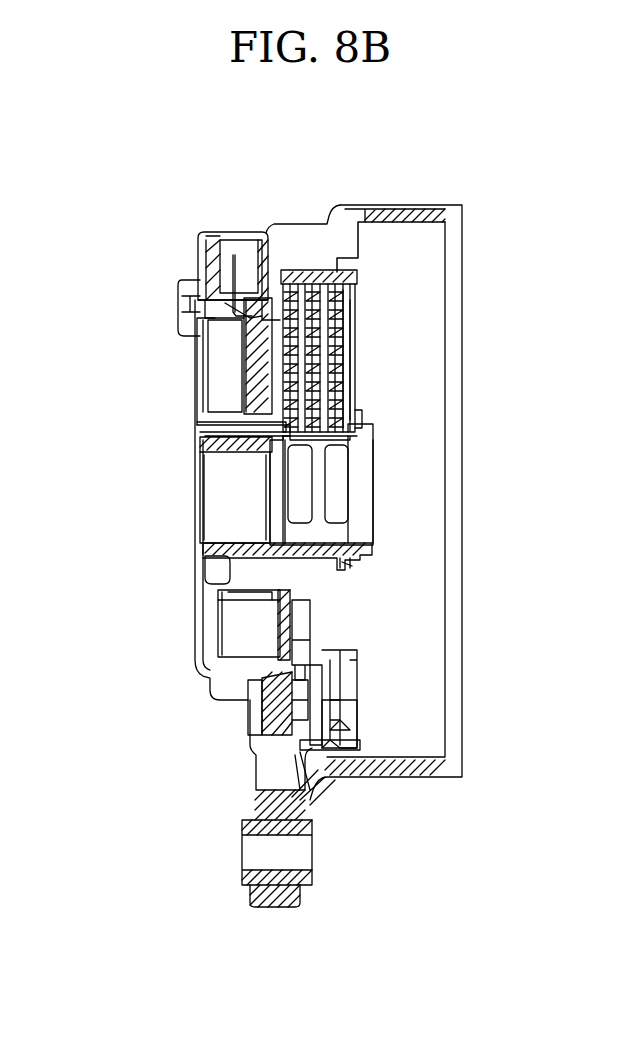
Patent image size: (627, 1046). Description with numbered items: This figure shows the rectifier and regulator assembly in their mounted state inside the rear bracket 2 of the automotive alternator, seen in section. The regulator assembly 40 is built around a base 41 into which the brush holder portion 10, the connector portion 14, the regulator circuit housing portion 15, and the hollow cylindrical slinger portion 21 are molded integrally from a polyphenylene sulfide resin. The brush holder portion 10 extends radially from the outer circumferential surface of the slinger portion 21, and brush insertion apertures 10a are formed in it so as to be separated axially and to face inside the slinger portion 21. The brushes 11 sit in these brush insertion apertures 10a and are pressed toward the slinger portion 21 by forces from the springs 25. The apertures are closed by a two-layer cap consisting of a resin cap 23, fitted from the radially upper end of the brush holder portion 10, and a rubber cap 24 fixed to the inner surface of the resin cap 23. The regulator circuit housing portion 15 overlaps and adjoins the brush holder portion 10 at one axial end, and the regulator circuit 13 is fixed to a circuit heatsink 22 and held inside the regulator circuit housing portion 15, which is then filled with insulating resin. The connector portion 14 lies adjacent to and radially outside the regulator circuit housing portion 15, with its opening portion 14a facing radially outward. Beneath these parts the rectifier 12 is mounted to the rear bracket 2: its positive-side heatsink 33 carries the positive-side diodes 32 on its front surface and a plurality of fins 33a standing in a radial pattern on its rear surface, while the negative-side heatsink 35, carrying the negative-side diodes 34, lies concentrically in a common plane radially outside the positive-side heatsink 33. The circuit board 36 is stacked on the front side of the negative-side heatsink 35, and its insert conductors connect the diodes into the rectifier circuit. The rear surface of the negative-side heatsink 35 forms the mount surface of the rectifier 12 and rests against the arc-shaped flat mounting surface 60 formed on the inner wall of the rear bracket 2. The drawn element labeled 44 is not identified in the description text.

The rear bracket 2 is at (452, 210).
The brush holder portion 10 is at (356, 354).
The brush insertion apertures 10a is at (356, 376).
The brushes 11 is at (345, 478).
The rectifier 12 is at (362, 662).
The regulator circuit 13 is at (232, 356).
The connector portion 14 is at (212, 263).
The opening portion 14a is at (235, 255).
The regulator circuit housing portion 15 is at (276, 432).
The slinger portion 21 is at (362, 558).
The circuit heatsink 22 is at (225, 378).
The resin cap 23 is at (358, 286).
The rubber cap 24 is at (356, 302).
The springs 25 is at (356, 330).
The positive-side diodes 32 is at (305, 618).
The positive-side heatsink 33 is at (260, 626).
The fins 33a is at (245, 608).
The negative-side diodes 34 is at (285, 735).
The negative-side heatsink 35 is at (262, 712).
The circuit board 36 is at (360, 706).
The regulator assembly 40 is at (360, 402).
The base 41 is at (356, 420).
The stator cover 44 is at (354, 268).
The mounting surface 60 is at (248, 688).